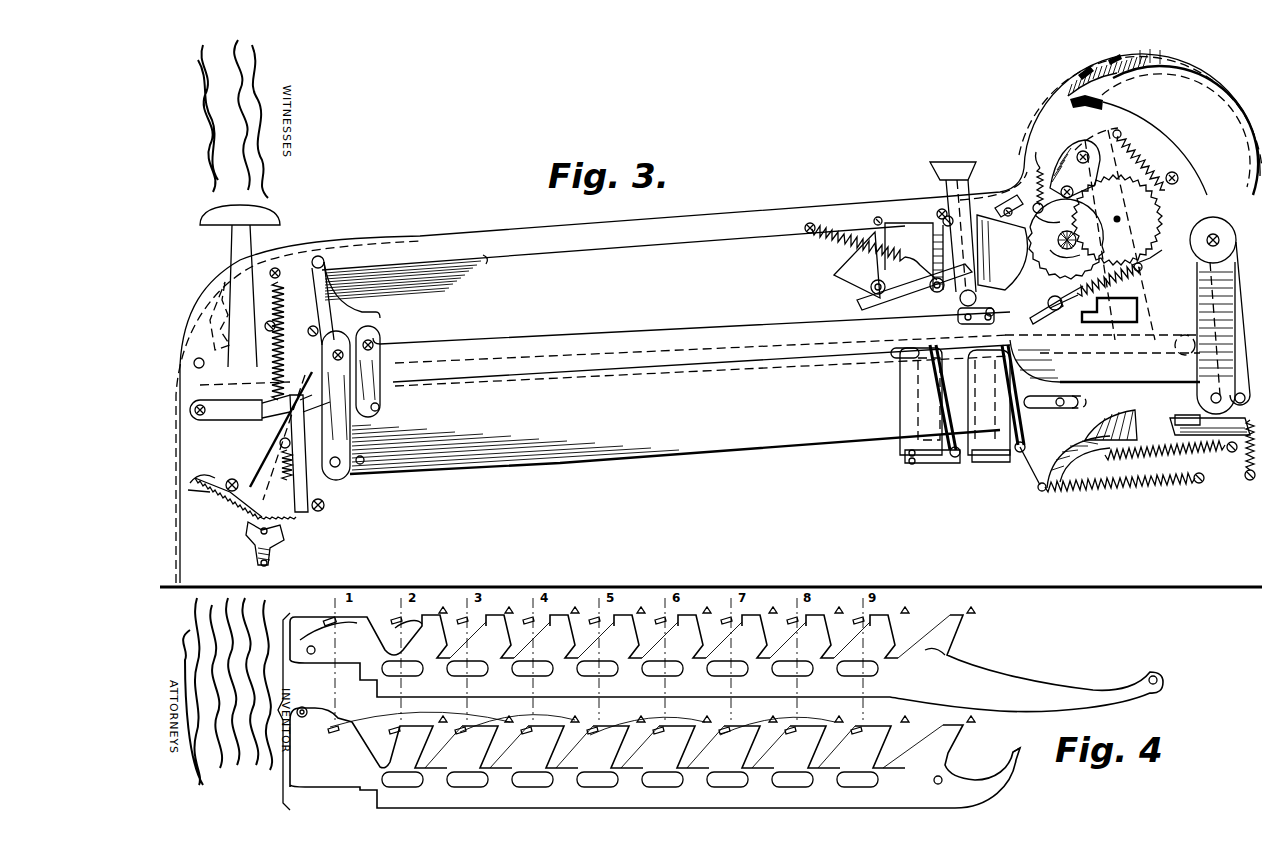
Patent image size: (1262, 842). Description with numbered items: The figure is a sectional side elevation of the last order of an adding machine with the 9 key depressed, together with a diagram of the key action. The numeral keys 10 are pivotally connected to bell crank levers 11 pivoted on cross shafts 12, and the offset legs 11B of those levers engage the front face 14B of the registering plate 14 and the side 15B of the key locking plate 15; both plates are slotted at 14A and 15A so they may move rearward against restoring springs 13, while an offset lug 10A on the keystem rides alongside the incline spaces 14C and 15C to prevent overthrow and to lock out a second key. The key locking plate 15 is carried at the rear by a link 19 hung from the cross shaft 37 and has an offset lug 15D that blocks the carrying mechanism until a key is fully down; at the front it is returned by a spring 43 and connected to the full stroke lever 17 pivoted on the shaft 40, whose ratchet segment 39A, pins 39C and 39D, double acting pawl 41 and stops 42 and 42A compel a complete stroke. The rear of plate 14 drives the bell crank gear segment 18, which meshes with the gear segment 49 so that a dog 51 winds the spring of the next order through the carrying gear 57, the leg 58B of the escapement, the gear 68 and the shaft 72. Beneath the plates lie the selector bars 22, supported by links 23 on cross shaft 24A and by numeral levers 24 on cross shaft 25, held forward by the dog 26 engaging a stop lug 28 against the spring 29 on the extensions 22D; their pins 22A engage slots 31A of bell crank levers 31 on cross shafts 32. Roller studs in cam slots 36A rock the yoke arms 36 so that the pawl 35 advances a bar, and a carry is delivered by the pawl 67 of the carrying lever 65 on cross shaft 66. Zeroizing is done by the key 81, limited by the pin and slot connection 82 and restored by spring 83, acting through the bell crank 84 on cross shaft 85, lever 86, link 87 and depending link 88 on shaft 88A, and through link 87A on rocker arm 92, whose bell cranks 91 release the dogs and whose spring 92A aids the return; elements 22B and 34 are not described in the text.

In FIG. 3, the 9 key 9 is at (953, 171).
In FIG. 3, the numeral keys 10 is at (954, 166).
In FIG. 4, the offset lug 10A is at (444, 607).
In FIG. 3, the bell crank levers 11 is at (858, 272).
In FIG. 3, the offset legs 11B is at (880, 217).
In FIG. 4, the offset legs 11B is at (326, 622).
In FIG. 3, the cross shafts 12 is at (872, 295).
In FIG. 3, the restoring springs 13 is at (828, 228).
In FIG. 4, the registering plate 14 is at (328, 660).
In FIG. 3, the slot 14A is at (893, 304).
In FIG. 4, the slot 14A is at (450, 674).
In FIG. 4, the front face 14B is at (361, 632).
In FIG. 4, the incline space 14C is at (905, 648).
In FIG. 3, the key locking plate 15 is at (496, 262).
In FIG. 4, the key locking plate 15 is at (335, 762).
In FIG. 4, the slot 15A is at (452, 787).
In FIG. 4, the side of cut out portion 15B is at (582, 734).
In FIG. 4, the incline space 15C is at (945, 770).
In FIG. 4, the offset lug 15D is at (1015, 758).
In FIG. 3, the full stroke lever 17 is at (312, 312).
In FIG. 3, the bell crank gear segment 18 is at (1115, 322).
In FIG. 3, the link 19 is at (914, 256).
In FIG. 3, the selector plates or bars 22 is at (488, 462).
In FIG. 3, the pins 22A is at (900, 358).
In FIG. 3, the slot 22B is at (1045, 406).
In FIG. 3, the extensions 22D is at (1078, 462).
In FIG. 3, the links 23 is at (292, 443).
In FIG. 3, the numeral levers 24 is at (1143, 124).
In FIG. 3, the cross shaft 24A is at (340, 349).
In FIG. 3, the cross shaft 25 is at (1218, 236).
In FIG. 3, the universal spring controlled dog 26 is at (1210, 395).
In FIG. 3, the stop lug 28 is at (1180, 425).
In FIG. 3, the spring 29 is at (1195, 480).
In FIG. 3, the bell crank levers 31 is at (900, 405).
In FIG. 3, the slots 31A is at (912, 372).
In FIG. 3, the cross shafts 32 is at (905, 460).
In FIG. 3, the stop 34 is at (1111, 419).
In FIG. 3, the pawl 35 is at (958, 308).
In FIG. 3, the yoke shaped arms 36 is at (936, 215).
In FIG. 3, the cam slots 36A is at (1002, 252).
In FIG. 3, the cross shaft 37 is at (805, 228).
In FIG. 3, the ratchet segment 39A is at (240, 520).
In FIG. 3, the pin 39C is at (295, 497).
In FIG. 3, the pin 39D is at (215, 502).
In FIG. 3, the shaft 40 is at (308, 331).
In FIG. 3, the double acting pawl 41 is at (255, 545).
In FIG. 3, the stop 42 is at (324, 506).
In FIG. 3, the stop 42A is at (232, 479).
In FIG. 3, the spring 43 is at (262, 430).
In FIG. 3, the gear segment 49 is at (1077, 243).
In FIG. 3, the dog 51 is at (1012, 205).
In FIG. 3, the carrying gear 57 is at (1066, 239).
In FIG. 3, the leg of escapement pawl 58B is at (1040, 195).
In FIG. 3, the carrying lever 65 is at (1050, 305).
In FIG. 3, the cross shaft 66 is at (1006, 217).
In FIG. 3, the pawl 67 is at (1045, 316).
In FIG. 3, the gear 68 is at (1158, 254).
In FIG. 3, the shaft 72 is at (1122, 218).
In FIG. 3, the zeroizing key 81 is at (230, 230).
In FIG. 3, the pin and slot connection 82 is at (224, 316).
In FIG. 3, the spring 83 is at (278, 277).
In FIG. 3, the bell crank lever 84 is at (198, 385).
In FIG. 3, the cross shaft 85 is at (195, 410).
In FIG. 3, the lever 86 is at (235, 420).
In FIG. 3, the link 87 is at (322, 418).
In FIG. 3, the link 87A is at (466, 346).
In FIG. 3, the depending link 88 is at (380, 366).
In FIG. 3, the shaft 88A is at (372, 330).
In FIG. 3, the rocking bell crank levers 91 is at (1075, 150).
In FIG. 3, the rocker arm 92 is at (1112, 138).
In FIG. 3, the spring 92A is at (1130, 218).